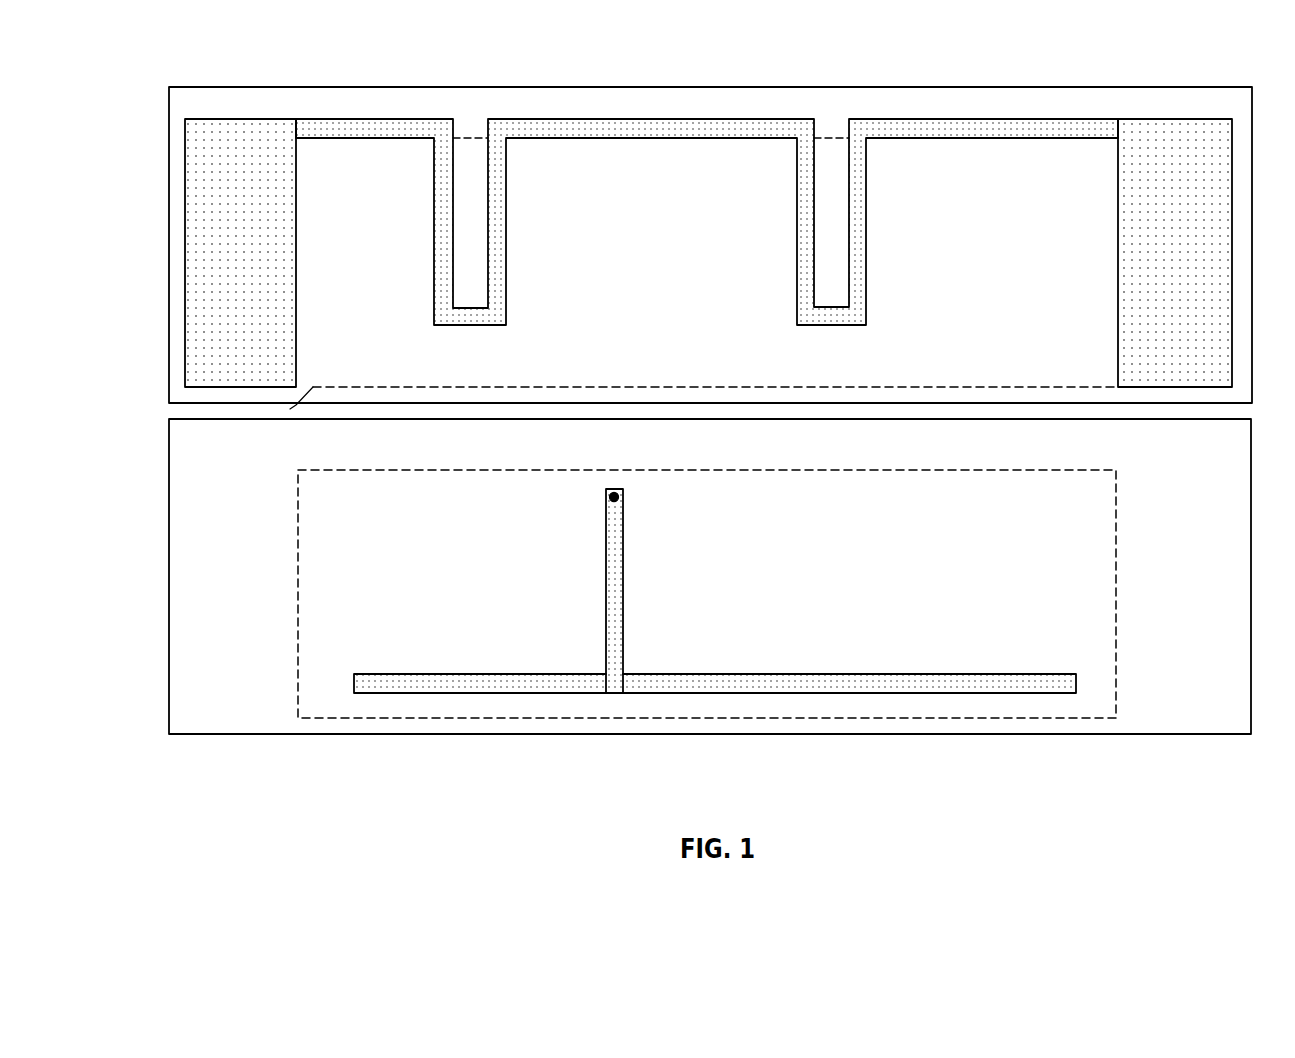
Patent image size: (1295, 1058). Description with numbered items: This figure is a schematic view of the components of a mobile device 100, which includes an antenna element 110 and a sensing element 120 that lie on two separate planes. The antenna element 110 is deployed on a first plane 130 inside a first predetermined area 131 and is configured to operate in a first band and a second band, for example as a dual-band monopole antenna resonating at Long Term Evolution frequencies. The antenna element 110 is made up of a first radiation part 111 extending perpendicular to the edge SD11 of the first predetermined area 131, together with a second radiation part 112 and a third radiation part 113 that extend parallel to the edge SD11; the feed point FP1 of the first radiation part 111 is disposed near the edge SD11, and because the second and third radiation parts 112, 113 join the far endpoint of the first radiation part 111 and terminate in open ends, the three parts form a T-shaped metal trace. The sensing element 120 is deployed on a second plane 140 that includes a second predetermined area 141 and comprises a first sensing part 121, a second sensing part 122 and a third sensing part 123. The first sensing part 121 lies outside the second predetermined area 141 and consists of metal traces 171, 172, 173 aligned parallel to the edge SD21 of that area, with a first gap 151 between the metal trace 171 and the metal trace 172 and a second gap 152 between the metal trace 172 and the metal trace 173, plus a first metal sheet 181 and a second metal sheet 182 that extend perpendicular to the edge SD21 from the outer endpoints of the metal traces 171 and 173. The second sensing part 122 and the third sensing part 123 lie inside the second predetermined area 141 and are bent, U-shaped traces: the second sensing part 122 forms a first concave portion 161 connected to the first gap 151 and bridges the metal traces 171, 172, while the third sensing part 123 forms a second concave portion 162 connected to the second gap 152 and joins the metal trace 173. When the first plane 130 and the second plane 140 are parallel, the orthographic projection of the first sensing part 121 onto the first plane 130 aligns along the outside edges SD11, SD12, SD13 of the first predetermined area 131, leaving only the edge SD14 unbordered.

The mobile device 100 is at (706, 395).
The antenna element 110 is at (733, 631).
The first radiation part 111 is at (623, 610).
The second radiation part 112 is at (483, 694).
The third radiation part 113 is at (935, 694).
The sensing element 120 is at (708, 199).
The first sensing part 121 is at (1188, 58).
The second sensing part 122 is at (506, 296).
The third sensing part 123 is at (866, 287).
The first plane 130 is at (168, 694).
The first predetermined area 131 is at (296, 658).
The second plane 140 is at (170, 125).
The second predetermined area 141 is at (290, 409).
The first gap 151 is at (471, 124).
The second gap 152 is at (833, 122).
The first concave portion 161 is at (471, 243).
The second concave portion 162 is at (830, 248).
The metal trace 171 is at (377, 119).
The metal trace 172 is at (652, 119).
The metal trace 173 is at (983, 119).
The first metal sheet 181 is at (239, 119).
The second metal sheet 182 is at (1175, 119).
The feed point FP1 is at (620, 499).
The edge SD11 is at (953, 473).
The edge SD12 is at (300, 604).
The edge SD13 is at (1114, 605).
The edge SD14 is at (322, 716).
The edge SD21 is at (987, 142).